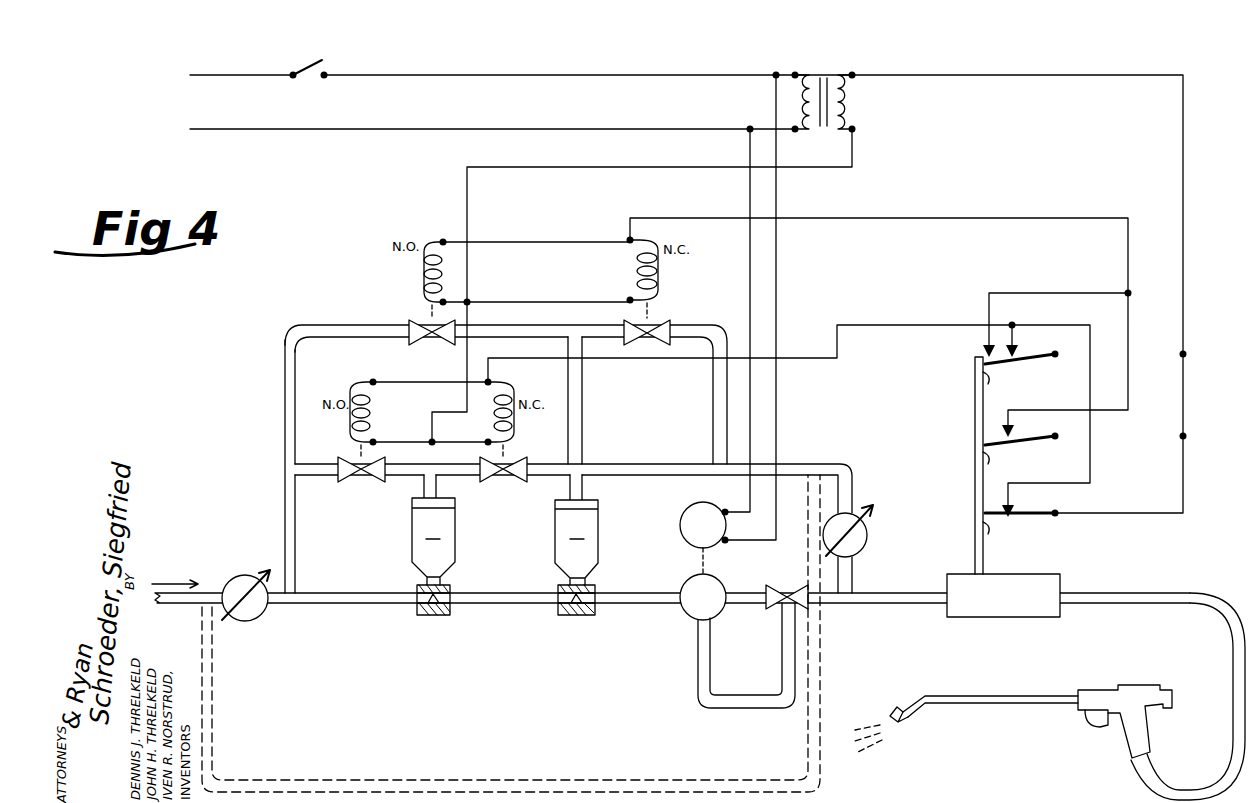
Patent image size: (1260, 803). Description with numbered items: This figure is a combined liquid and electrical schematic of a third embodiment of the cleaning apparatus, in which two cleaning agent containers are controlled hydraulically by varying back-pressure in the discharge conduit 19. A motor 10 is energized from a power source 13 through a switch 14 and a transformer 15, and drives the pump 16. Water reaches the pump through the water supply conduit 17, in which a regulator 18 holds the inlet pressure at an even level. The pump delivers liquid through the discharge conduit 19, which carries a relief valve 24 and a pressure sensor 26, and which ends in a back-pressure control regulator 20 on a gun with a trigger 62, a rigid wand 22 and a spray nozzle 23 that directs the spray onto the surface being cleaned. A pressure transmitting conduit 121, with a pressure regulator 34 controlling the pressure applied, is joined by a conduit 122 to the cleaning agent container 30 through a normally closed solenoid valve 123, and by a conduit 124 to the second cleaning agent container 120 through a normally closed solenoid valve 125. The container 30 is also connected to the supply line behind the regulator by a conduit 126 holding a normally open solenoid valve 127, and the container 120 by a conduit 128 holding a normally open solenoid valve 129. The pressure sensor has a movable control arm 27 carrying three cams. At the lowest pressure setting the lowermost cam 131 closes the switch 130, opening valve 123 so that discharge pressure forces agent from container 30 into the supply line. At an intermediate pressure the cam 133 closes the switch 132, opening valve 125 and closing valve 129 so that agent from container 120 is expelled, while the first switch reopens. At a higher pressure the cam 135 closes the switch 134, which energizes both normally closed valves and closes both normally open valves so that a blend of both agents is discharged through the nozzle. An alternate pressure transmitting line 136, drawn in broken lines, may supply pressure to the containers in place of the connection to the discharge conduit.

The motor 10 is at (680, 512).
The power source 13 is at (268, 75).
The switch 14 is at (322, 72).
The transformer 15 is at (810, 75).
The pump 16 is at (684, 577).
The water supply conduit 17 is at (193, 604).
The regulator 18 is at (266, 612).
The discharge conduit 19 is at (1152, 792).
The back-pressure control regulator 20 is at (1143, 686).
The wand 22 is at (985, 696).
The spray nozzle 23 is at (902, 722).
The relief valve 24 is at (785, 590).
The pressure sensor 26 is at (947, 622).
The control arm 27 is at (975, 508).
The cleaning agent container 30 is at (412, 549).
The pressure regulator 34 is at (858, 552).
The trigger 62 is at (1102, 728).
The second cleaning agent container 120 is at (555, 549).
The pressure transmitting conduit 121 is at (818, 452).
The conduit 122 is at (605, 463).
The normally closed solenoid valve 123 is at (507, 482).
The conduit 124 is at (582, 400).
The normally closed solenoid valve 125 is at (657, 316).
The conduit 126 is at (285, 505).
The normally open solenoid valve 127 is at (366, 482).
The conduit 128 is at (355, 325).
The normally open solenoid valve 129 is at (420, 315).
The cam actuated switch 130 is at (1022, 498).
The cam 131 is at (990, 542).
The cam actuated switch 132 is at (1020, 420).
The cam 133 is at (995, 466).
The switch 134 is at (1020, 340).
The cam 135 is at (995, 386).
The alternate pressure transmitting line 136 is at (568, 779).